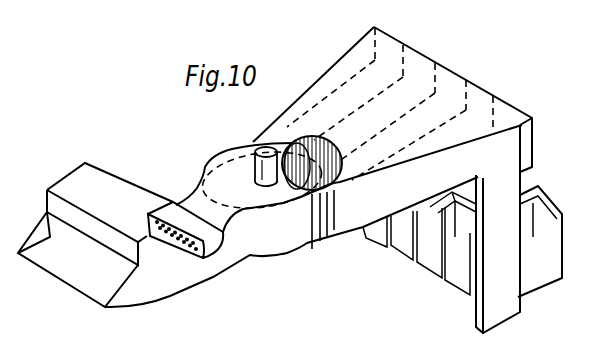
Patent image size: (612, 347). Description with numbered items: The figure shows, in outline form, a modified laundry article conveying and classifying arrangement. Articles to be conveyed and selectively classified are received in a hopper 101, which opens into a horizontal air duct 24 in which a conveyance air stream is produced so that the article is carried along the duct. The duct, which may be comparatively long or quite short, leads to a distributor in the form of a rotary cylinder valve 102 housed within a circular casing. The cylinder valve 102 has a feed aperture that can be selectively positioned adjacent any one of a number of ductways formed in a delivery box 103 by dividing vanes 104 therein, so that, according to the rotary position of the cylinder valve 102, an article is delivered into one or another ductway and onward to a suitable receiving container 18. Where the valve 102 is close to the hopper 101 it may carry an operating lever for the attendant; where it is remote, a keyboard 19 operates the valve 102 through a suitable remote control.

The receiving container 18 is at (547, 277).
The keyboard mechanism 19 is at (207, 252).
The air duct 24 is at (233, 258).
The hopper 101 is at (87, 283).
The rotary cylinder valve 102 is at (314, 243).
The delivery box 103 is at (403, 60).
The dividing vane 104 is at (270, 147).